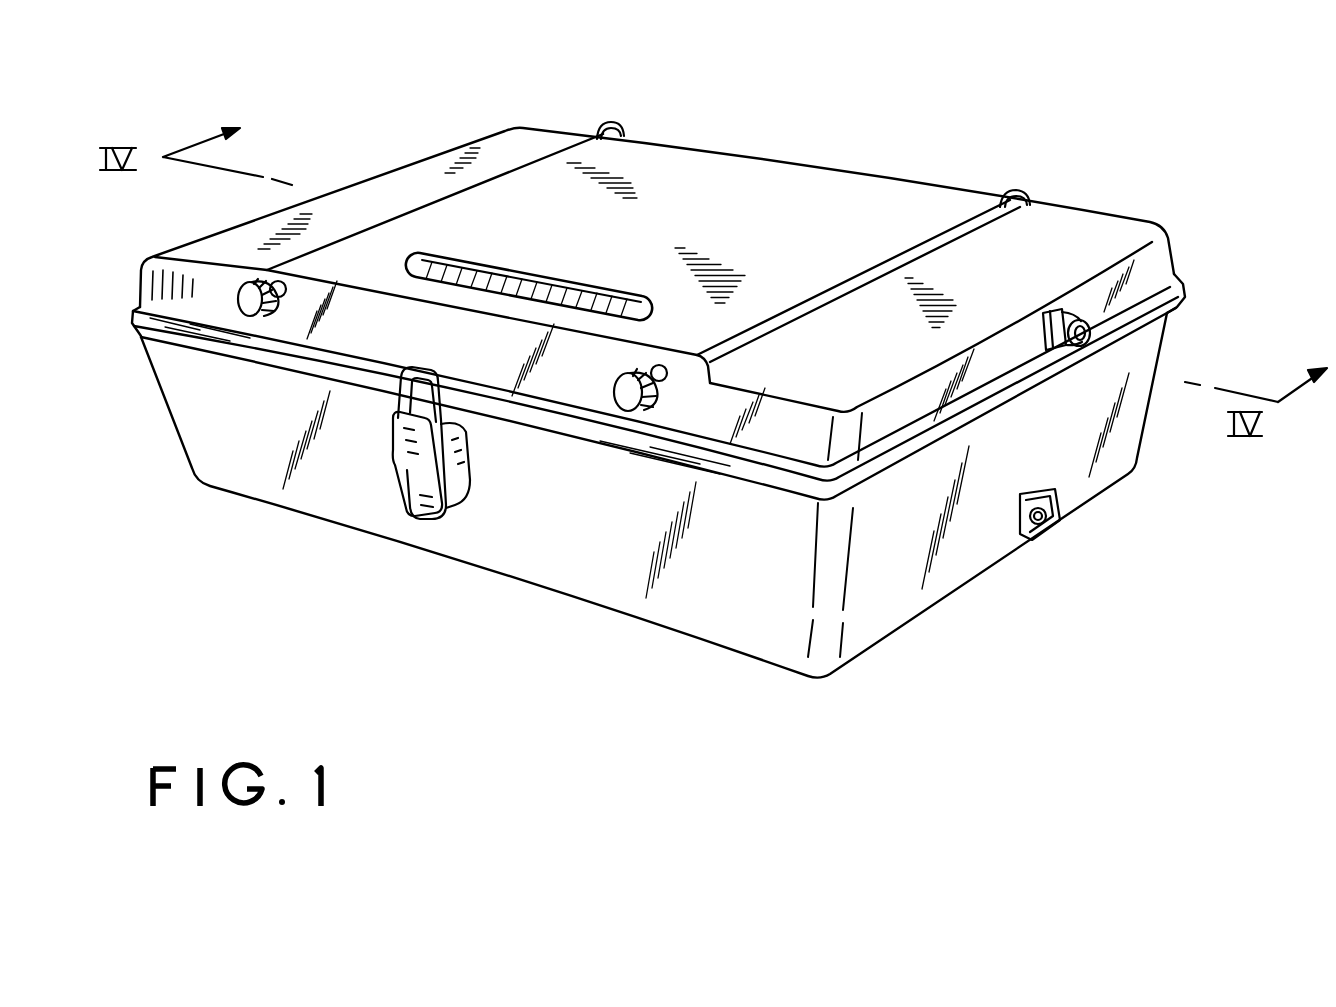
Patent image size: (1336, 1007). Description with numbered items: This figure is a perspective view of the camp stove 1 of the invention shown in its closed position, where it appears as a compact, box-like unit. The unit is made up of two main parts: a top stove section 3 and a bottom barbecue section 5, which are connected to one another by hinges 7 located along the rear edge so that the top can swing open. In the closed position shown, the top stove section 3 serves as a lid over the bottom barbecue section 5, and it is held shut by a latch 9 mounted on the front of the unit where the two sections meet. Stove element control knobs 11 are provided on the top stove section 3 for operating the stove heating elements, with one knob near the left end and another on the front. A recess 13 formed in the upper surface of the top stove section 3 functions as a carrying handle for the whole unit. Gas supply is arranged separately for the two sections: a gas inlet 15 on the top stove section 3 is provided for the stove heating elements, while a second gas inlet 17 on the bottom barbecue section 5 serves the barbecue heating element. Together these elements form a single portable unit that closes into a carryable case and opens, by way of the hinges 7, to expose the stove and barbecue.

The camp stove 1 is at (833, 147).
The top stove section 3 is at (730, 165).
The bottom barbecue section 5 is at (582, 582).
The hinges 7 is at (620, 130).
The latch 9 is at (393, 462).
The stove element control knobs 11 is at (240, 293).
The recess 13 is at (591, 298).
The gas inlet 15 is at (1090, 313).
The gas inlet 17 is at (1028, 538).